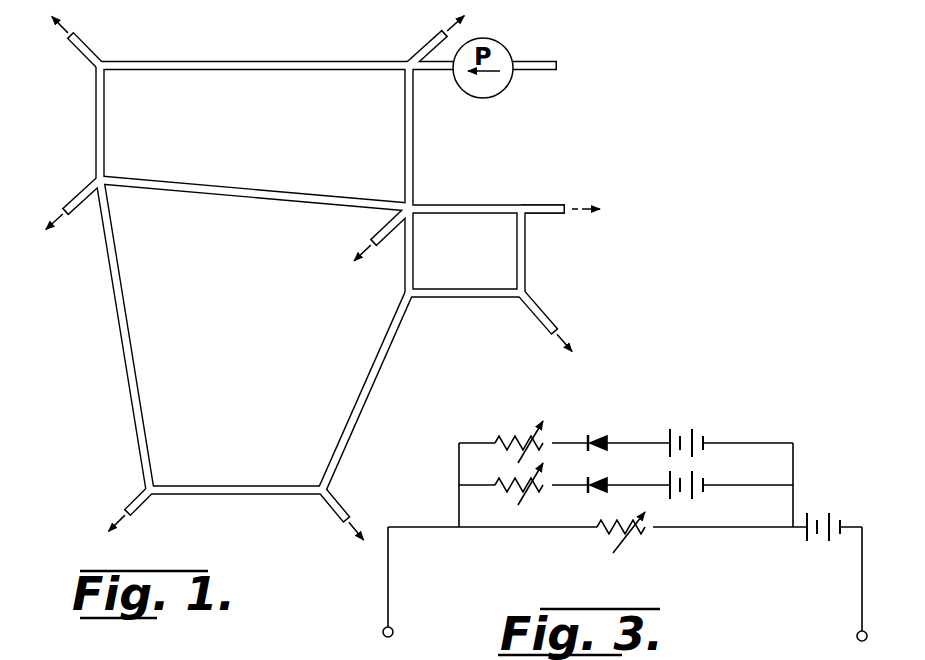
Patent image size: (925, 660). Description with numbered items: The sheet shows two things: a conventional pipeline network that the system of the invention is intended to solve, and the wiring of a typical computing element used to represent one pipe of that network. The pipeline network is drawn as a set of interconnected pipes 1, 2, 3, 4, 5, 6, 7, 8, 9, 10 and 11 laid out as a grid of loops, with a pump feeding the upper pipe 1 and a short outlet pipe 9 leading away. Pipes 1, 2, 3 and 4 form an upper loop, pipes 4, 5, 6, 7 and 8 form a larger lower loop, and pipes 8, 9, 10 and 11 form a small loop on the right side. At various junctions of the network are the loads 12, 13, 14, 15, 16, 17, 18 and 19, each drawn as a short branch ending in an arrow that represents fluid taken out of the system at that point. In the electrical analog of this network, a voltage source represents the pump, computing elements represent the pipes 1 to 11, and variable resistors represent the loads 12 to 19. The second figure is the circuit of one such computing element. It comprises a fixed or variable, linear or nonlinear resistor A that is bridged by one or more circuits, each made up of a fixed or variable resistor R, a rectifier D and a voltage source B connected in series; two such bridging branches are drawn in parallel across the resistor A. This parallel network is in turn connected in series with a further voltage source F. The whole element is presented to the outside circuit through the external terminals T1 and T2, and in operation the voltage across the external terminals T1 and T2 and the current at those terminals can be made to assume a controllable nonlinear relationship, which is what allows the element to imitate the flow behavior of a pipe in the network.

In FIG. 1, the pipe 1 is at (266, 70).
In FIG. 1, the pipe 2 is at (104, 135).
In FIG. 1, the pipe 3 is at (405, 138).
In FIG. 1, the pipe 4 is at (294, 191).
In FIG. 1, the pipe 5 is at (129, 335).
In FIG. 1, the pipe 6 is at (354, 376).
In FIG. 1, the pipe 7 is at (216, 484).
In FIG. 1, the pipe 8 is at (414, 255).
In FIG. 1, the pipe 9 is at (464, 204).
In FIG. 1, the pipe 10 is at (526, 246).
In FIG. 1, the pipe 11 is at (450, 298).
In FIG. 1, the load 12 is at (428, 47).
In FIG. 1, the load 13 is at (78, 38).
In FIG. 1, the load 14 is at (84, 188).
In FIG. 1, the load 15 is at (136, 511).
In FIG. 1, the load 16 is at (336, 496).
In FIG. 1, the load 17 is at (382, 246).
In FIG. 1, the load 18 is at (547, 312).
In FIG. 1, the load 19 is at (556, 214).
In FIG. 3, the resistor R is at (534, 454).
In FIG. 3, the rectifier D is at (598, 436).
In FIG. 3, the voltage source B is at (698, 438).
In FIG. 3, the resistor A is at (632, 536).
In FIG. 3, the voltage source F is at (814, 520).
In FIG. 3, the external terminal T1 is at (392, 635).
In FIG. 3, the external terminal T2 is at (863, 637).